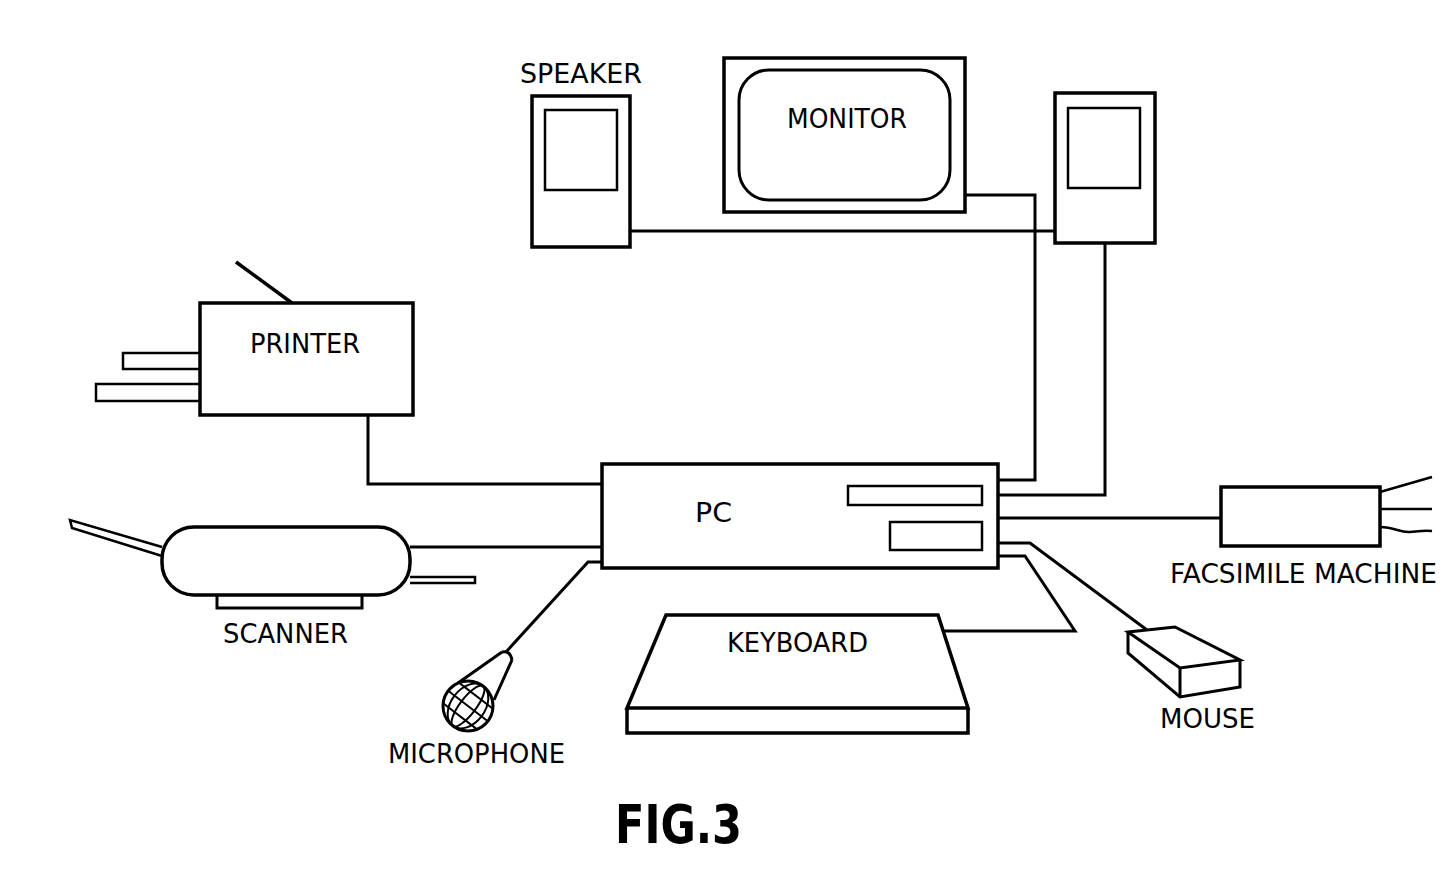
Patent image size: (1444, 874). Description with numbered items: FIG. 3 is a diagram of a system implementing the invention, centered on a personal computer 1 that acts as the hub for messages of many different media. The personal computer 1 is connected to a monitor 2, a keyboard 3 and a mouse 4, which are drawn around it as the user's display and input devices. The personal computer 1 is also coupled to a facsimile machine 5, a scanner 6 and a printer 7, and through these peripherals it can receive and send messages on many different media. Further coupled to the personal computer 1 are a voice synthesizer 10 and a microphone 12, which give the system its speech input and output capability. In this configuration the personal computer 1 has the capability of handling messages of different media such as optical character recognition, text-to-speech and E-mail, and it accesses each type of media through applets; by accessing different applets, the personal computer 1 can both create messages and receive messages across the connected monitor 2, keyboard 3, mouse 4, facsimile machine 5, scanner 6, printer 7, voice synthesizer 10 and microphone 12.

The personal computer 1 is at (696, 464).
The monitor 2 is at (847, 58).
The keyboard 3 is at (962, 699).
The mouse 4 is at (1150, 678).
The facsimile machine 5 is at (1315, 487).
The scanner 6 is at (260, 527).
The printer 7 is at (315, 303).
The voice synthesizer 10 is at (1090, 93).
The microphone 12 is at (447, 685).